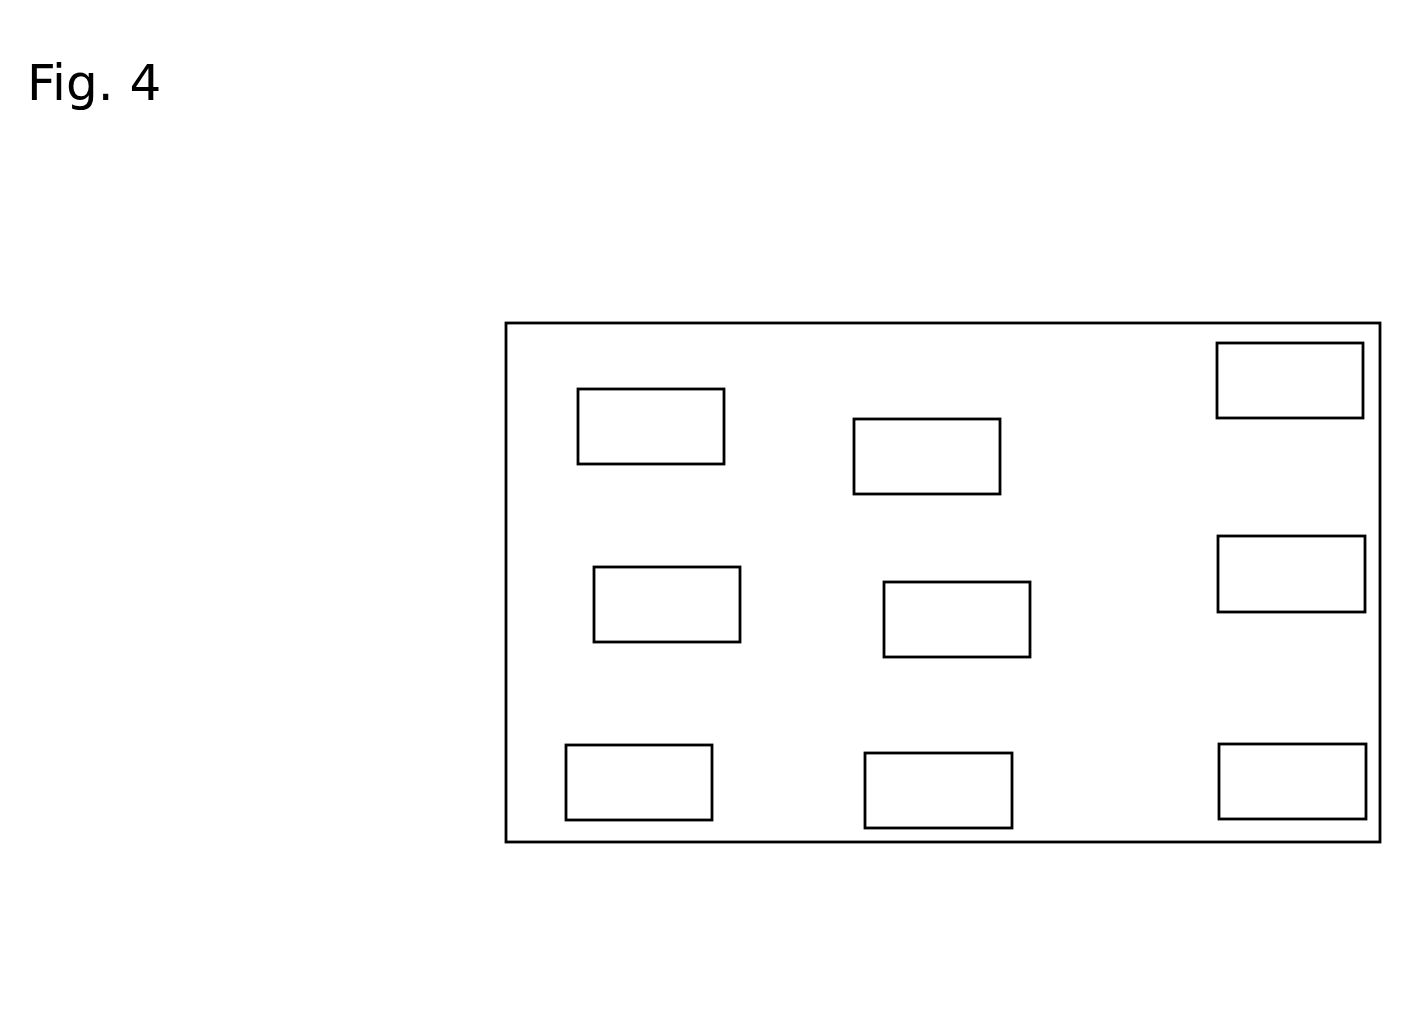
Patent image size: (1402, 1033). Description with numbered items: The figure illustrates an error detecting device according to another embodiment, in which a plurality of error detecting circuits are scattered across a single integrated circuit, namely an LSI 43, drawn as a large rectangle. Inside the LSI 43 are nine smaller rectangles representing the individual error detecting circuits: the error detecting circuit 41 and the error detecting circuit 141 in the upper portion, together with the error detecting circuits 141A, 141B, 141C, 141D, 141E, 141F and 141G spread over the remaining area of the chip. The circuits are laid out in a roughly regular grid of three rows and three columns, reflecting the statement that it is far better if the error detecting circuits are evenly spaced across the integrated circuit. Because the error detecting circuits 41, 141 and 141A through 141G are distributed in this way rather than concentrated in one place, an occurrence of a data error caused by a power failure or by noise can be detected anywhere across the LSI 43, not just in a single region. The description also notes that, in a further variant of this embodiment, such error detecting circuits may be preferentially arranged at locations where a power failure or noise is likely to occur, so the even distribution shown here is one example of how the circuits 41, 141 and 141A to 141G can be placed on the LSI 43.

The LSI 43 is at (708, 846).
The error detecting circuit 41 is at (637, 388).
The error detecting circuit 141 is at (890, 418).
The error detecting circuit 141A is at (1242, 419).
The error detecting circuit 141B is at (668, 566).
The error detecting circuit 141C is at (912, 581).
The error detecting circuit 141D is at (1252, 613).
The error detecting circuit 141E is at (593, 744).
The error detecting circuit 141F is at (899, 752).
The error detecting circuit 141G is at (1292, 743).